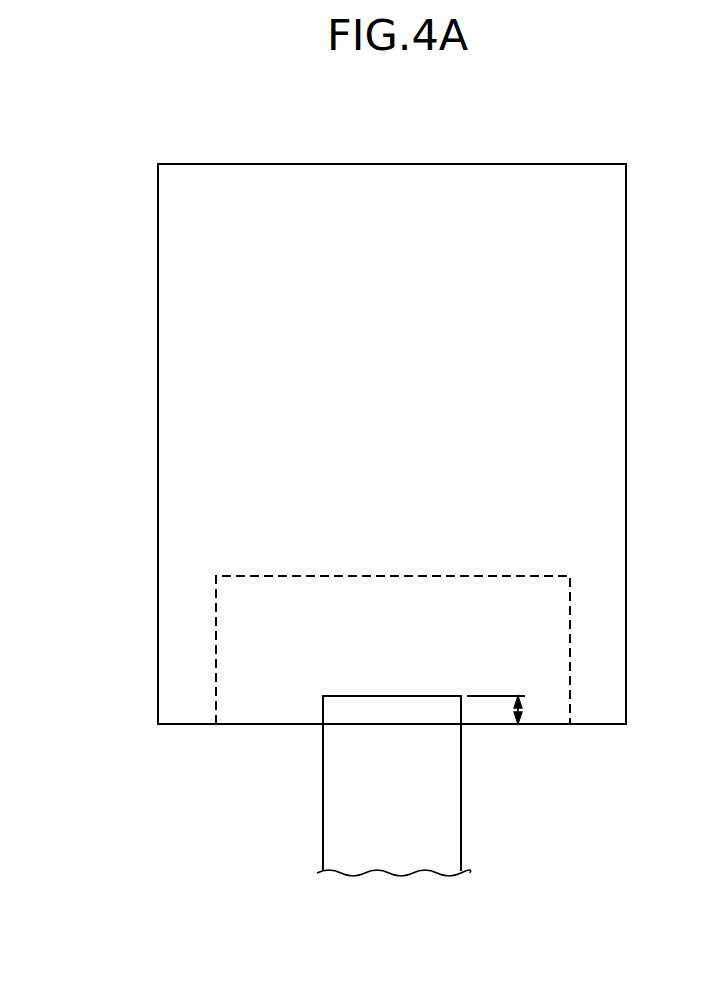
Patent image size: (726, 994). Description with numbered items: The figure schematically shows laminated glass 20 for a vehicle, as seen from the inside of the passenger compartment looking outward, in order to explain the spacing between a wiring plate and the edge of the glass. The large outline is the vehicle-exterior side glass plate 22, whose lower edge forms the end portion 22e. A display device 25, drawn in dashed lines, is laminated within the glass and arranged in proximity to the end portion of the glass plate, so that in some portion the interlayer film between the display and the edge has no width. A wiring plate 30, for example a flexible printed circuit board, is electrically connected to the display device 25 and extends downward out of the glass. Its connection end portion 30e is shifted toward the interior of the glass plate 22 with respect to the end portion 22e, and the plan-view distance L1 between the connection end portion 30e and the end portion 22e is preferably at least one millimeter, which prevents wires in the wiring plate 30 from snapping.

The laminated glass 20 is at (200, 145).
The glass plate 22 is at (514, 164).
The end portion of the glass plate 22e is at (605, 725).
The display device 25 is at (535, 608).
The wiring plate 30 is at (445, 815).
The connection end portion 30e is at (330, 692).
The distance L1 is at (521, 716).